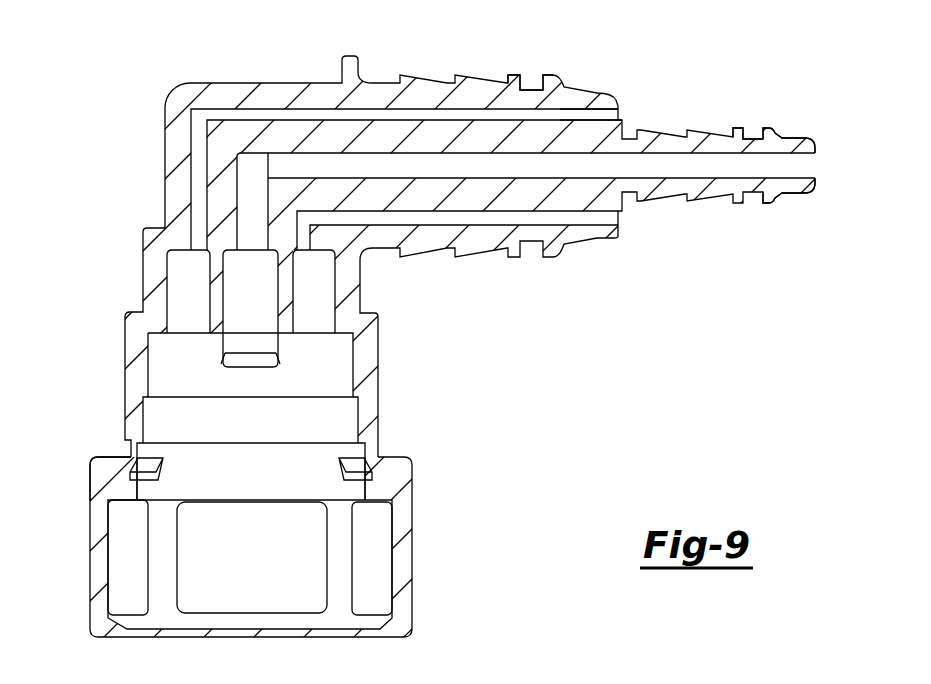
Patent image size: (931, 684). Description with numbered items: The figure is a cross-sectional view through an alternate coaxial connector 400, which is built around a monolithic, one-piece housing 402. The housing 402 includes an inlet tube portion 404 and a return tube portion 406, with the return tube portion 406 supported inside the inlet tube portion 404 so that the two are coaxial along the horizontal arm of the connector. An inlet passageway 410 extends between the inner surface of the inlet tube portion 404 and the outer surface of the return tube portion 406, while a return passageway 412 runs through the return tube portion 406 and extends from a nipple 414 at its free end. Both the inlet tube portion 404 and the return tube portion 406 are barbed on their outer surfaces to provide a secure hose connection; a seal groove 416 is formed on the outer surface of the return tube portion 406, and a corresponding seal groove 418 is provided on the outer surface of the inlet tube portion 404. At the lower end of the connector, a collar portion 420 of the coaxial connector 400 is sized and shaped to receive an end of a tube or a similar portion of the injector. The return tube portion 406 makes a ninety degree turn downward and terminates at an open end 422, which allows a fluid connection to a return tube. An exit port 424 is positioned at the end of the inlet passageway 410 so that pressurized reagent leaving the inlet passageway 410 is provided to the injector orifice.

The coaxial connector 400 is at (413, 540).
The housing 402 is at (397, 463).
The inlet tube portion 404 is at (405, 83).
The return tube portion 406 is at (697, 196).
The inlet passageway 410 is at (612, 114).
The return passageway 412 is at (782, 178).
The nipple 414 is at (780, 138).
The seal groove 416 is at (755, 136).
The seal groove 418 is at (537, 88).
The collar portion 420 is at (95, 472).
The open end 422 is at (283, 348).
The exit port 424 is at (200, 250).